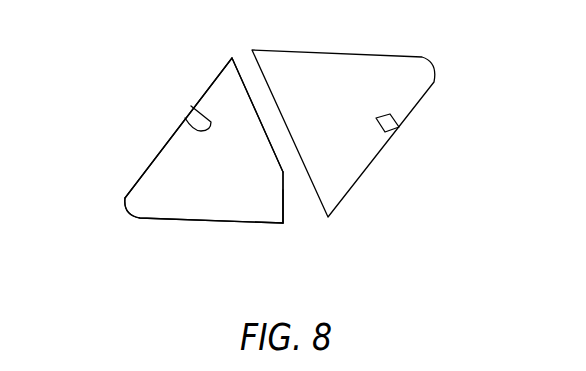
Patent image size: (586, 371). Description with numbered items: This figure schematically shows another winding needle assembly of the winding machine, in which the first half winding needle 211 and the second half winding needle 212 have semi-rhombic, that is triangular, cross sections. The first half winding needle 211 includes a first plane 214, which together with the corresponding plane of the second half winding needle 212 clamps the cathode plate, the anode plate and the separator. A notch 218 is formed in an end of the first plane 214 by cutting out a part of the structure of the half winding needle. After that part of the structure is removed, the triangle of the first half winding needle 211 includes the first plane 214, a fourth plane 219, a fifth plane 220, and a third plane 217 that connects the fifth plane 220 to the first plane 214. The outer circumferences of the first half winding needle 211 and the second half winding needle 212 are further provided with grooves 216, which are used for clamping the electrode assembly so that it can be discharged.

The first half winding needle 211 is at (225, 198).
The second half winding needle 212 is at (343, 76).
The first plane 214 is at (250, 99).
The grooves 216 is at (400, 128).
The third plane 217 is at (285, 212).
The notch 218 is at (296, 206).
The fourth plane 219 is at (167, 143).
The fifth plane 220 is at (242, 222).